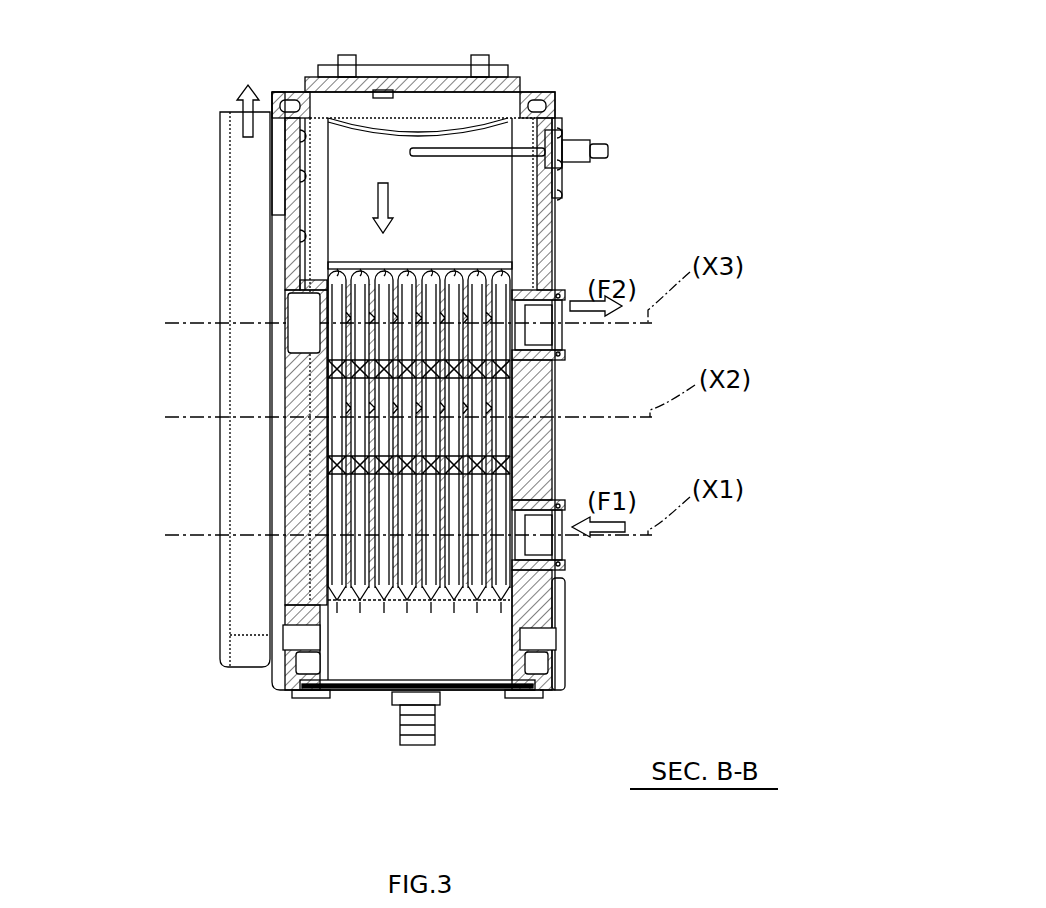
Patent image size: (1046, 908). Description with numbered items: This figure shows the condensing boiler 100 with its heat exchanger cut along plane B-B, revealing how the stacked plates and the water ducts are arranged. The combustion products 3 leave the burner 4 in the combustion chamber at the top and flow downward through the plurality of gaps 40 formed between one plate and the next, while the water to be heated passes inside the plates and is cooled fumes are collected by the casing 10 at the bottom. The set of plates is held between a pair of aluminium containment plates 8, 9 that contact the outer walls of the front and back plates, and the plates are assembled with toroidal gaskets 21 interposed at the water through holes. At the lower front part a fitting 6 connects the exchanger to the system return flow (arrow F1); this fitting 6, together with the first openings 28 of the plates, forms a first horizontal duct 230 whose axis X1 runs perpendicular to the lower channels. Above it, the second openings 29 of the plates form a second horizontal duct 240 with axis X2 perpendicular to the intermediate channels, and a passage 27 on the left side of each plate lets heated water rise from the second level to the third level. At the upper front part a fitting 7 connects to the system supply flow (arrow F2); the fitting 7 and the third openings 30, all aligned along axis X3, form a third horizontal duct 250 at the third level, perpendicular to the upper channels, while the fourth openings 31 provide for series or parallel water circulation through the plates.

The gas condensing boiler 100 is at (645, 388).
The combustion products 3 is at (238, 104).
The burner 4 is at (410, 122).
The fitting 6 is at (555, 540).
The fitting 7 is at (565, 330).
The containment plate 8 is at (548, 395).
The containment plate 9 is at (300, 440).
The casing 10 is at (457, 695).
The toroidal gasket 21 is at (338, 392).
The passage 27 is at (320, 360).
The first opening 28 is at (538, 635).
The second opening 29 is at (480, 412).
The third opening 30 is at (465, 268).
The fourth opening 31 is at (405, 262).
The gap 40 is at (550, 270).
The first horizontal duct 230 is at (378, 602).
The second horizontal duct 240 is at (293, 470).
The third horizontal duct 250 is at (322, 292).